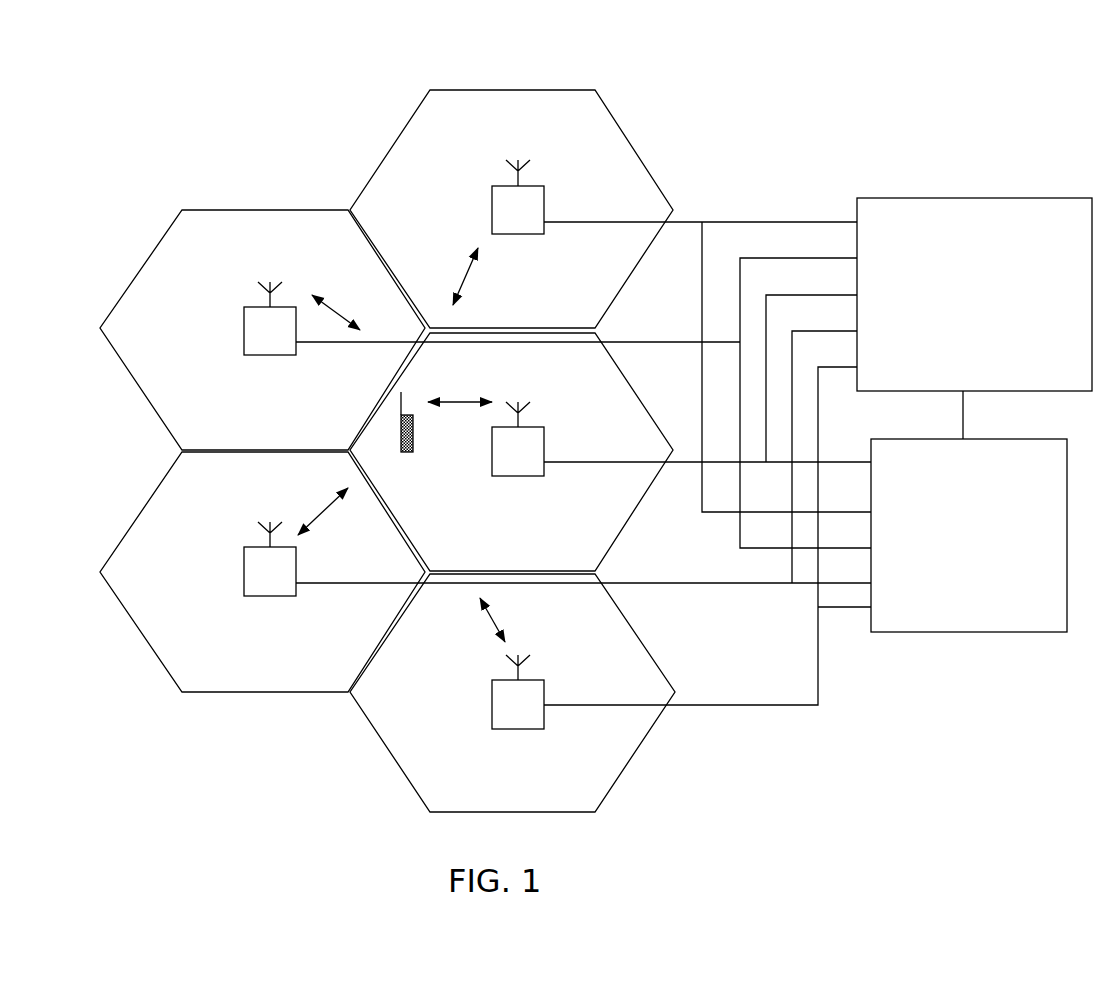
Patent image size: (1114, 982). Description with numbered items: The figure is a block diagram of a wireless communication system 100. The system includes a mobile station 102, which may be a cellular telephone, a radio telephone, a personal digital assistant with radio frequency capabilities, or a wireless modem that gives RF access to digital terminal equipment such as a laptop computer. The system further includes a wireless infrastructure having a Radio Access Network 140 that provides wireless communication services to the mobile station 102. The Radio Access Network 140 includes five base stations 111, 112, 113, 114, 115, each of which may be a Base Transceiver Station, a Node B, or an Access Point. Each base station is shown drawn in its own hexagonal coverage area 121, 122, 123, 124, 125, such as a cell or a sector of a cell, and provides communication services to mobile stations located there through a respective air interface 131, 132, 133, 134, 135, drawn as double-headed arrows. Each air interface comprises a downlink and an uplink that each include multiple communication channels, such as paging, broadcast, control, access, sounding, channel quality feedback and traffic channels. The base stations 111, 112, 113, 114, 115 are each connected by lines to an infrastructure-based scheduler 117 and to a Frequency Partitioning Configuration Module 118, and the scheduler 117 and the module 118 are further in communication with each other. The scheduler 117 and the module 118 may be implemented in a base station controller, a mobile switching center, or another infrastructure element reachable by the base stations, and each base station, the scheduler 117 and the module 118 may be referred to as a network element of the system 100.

The wireless communication system 100 is at (303, 804).
The mobile station 102 is at (401, 428).
The base station 111 is at (545, 450).
The base station 112 is at (546, 208).
The base station 113 is at (244, 341).
The base station 114 is at (244, 581).
The base station 115 is at (491, 715).
The scheduler 117 is at (1030, 437).
The Frequency Partitioning Configuration Module 118 is at (1017, 197).
The coverage area 121 is at (527, 531).
The coverage area 122 is at (462, 156).
The coverage area 123 is at (215, 276).
The coverage area 124 is at (253, 651).
The coverage area 125 is at (488, 781).
The air interface 131 is at (466, 402).
The air interface 132 is at (467, 282).
The air interface 133 is at (335, 305).
The air interface 134 is at (325, 512).
The air interface 135 is at (493, 619).
The Radio Access Network 140 is at (675, 127).